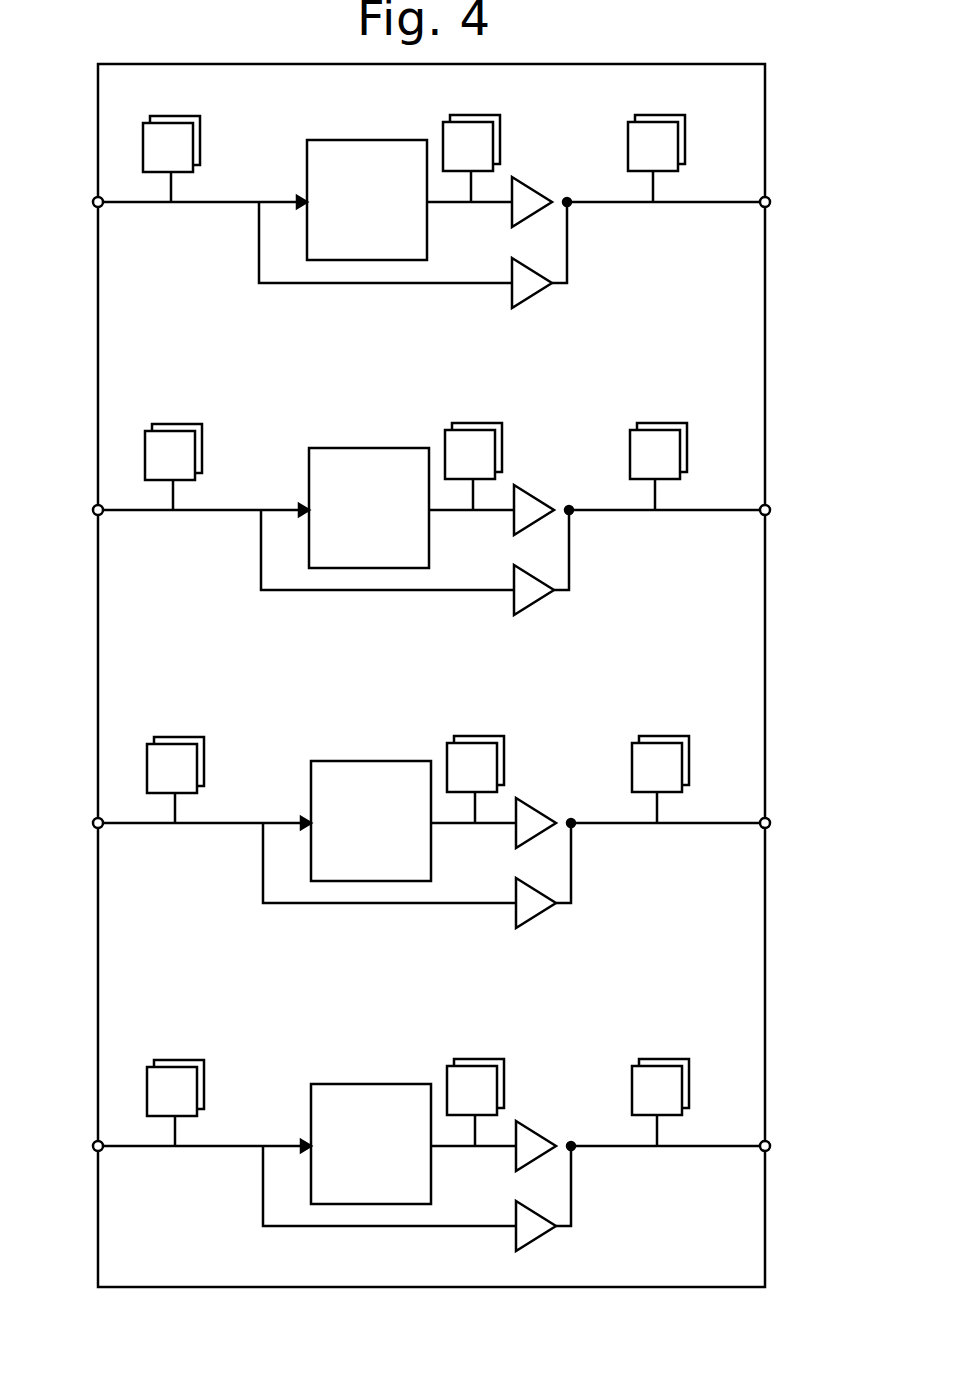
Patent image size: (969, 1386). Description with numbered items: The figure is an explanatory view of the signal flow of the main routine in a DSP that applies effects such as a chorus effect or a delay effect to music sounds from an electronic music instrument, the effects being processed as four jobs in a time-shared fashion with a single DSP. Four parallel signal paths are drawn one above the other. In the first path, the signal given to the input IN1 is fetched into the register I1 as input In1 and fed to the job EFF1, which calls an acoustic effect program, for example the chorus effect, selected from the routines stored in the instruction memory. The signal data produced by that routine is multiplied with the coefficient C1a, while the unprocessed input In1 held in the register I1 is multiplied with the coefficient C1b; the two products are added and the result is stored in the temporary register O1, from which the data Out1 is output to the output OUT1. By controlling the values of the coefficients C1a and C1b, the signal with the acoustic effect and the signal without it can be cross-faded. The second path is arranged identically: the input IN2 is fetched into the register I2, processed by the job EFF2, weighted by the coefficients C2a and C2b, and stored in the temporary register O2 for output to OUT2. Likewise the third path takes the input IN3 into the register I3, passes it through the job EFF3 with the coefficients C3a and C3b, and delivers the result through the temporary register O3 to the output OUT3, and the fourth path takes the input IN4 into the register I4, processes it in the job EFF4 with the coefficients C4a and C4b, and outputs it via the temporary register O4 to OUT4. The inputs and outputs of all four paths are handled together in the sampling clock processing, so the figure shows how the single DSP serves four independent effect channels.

The register I1 is at (171, 143).
The temporary register O1 is at (656, 143).
The job EFF1 is at (367, 200).
The input IN1 is at (71, 204).
The output OUT1 is at (805, 204).
The coefficient C1a is at (544, 194).
The coefficient C1b is at (544, 263).
The register I2 is at (173, 451).
The temporary register O2 is at (658, 451).
The job EFF2 is at (369, 508).
The input IN2 is at (71, 512).
The output OUT2 is at (805, 512).
The coefficient C2a is at (546, 502).
The coefficient C2b is at (546, 571).
The register I3 is at (175, 764).
The temporary register O3 is at (660, 764).
The job EFF3 is at (371, 821).
The input IN3 is at (71, 825).
The output OUT3 is at (805, 825).
The coefficient C3a is at (548, 815).
The coefficient C3b is at (548, 884).
The register I4 is at (175, 1087).
The temporary register O4 is at (660, 1087).
The job EFF4 is at (371, 1144).
The input IN4 is at (71, 1148).
The output OUT4 is at (805, 1148).
The coefficient C4a is at (548, 1138).
The coefficient C4b is at (548, 1207).